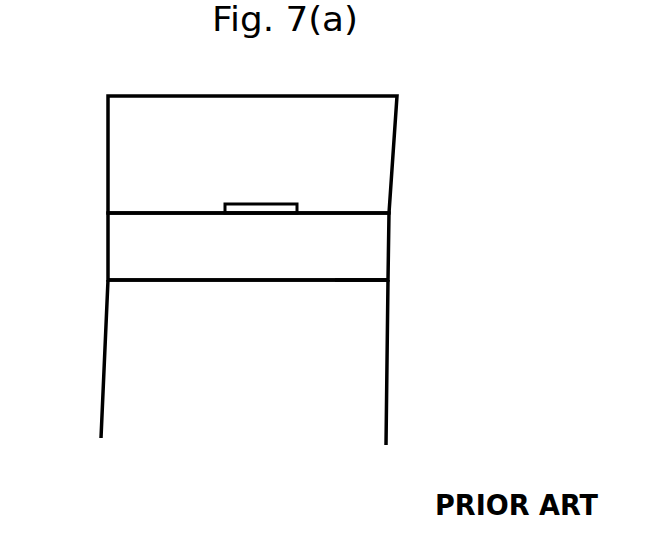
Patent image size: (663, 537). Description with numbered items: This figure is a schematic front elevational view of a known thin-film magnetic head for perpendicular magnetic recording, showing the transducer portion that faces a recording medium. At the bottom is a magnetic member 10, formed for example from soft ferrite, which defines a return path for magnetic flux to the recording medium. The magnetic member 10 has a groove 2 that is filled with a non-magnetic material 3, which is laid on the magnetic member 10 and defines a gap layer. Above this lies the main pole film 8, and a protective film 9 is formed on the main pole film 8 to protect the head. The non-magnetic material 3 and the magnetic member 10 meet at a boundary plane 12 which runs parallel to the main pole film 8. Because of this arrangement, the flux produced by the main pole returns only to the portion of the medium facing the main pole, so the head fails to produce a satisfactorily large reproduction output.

The protective film 9 is at (383, 121).
The main pole film 8 is at (272, 204).
The non-magnetic material 3 is at (375, 236).
The groove 2 is at (148, 280).
The boundary plane 12 is at (335, 281).
The magnetic member 10 is at (370, 391).